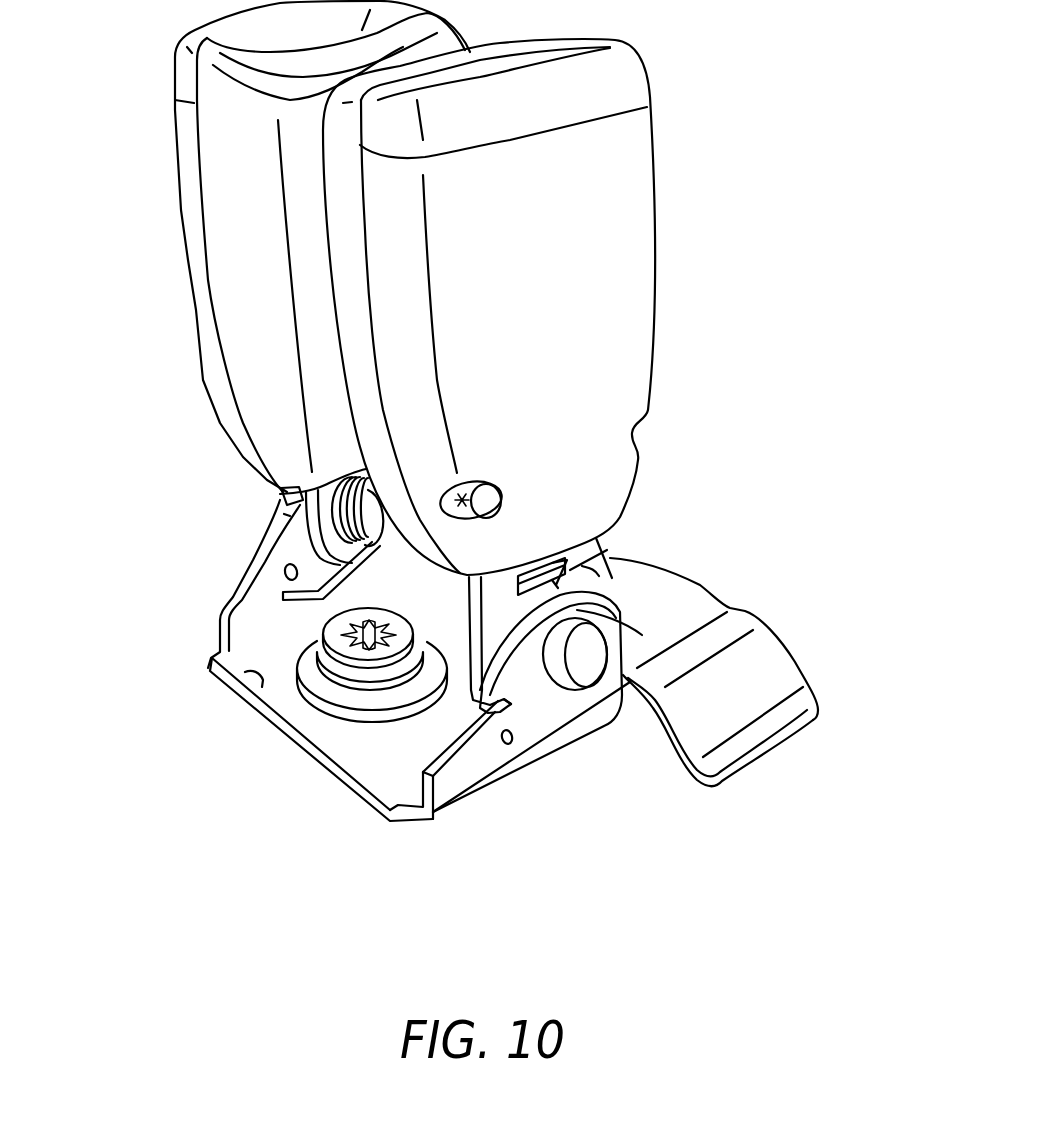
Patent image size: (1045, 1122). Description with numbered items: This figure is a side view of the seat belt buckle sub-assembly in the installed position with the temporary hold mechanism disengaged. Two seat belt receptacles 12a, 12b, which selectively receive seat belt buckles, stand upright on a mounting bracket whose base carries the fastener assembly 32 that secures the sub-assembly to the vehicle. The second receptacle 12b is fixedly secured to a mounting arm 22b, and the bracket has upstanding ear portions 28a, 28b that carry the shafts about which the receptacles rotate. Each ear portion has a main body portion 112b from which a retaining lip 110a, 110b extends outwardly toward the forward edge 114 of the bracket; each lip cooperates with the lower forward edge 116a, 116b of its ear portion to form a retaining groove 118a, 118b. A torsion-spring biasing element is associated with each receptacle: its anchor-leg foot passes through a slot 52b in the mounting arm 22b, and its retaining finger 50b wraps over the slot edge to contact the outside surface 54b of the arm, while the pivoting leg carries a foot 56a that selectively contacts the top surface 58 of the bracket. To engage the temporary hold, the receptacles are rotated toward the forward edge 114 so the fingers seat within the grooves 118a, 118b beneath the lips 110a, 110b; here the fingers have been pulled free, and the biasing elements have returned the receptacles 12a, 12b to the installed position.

The first seat belt receptacle 12a is at (256, 276).
The second seat belt receptacle 12b is at (552, 312).
The mounting arm 22b is at (603, 548).
The ear portion 28a is at (255, 592).
The ear portion 28b is at (552, 742).
The fastener assembly 32 is at (300, 716).
The retaining finger 50b is at (617, 585).
The slot 52b is at (530, 585).
The outside surface 54b is at (612, 556).
The foot 56a is at (303, 606).
The top surface 58 is at (248, 676).
The retaining lip 110a is at (285, 498).
The retaining lip 110b is at (497, 703).
The main body portion 112b is at (620, 563).
The forward edge 114 is at (310, 752).
The lower forward edge 116a is at (222, 627).
The lower forward edge 116b is at (396, 812).
The retaining groove 118a is at (278, 514).
The retaining groove 118b is at (509, 704).